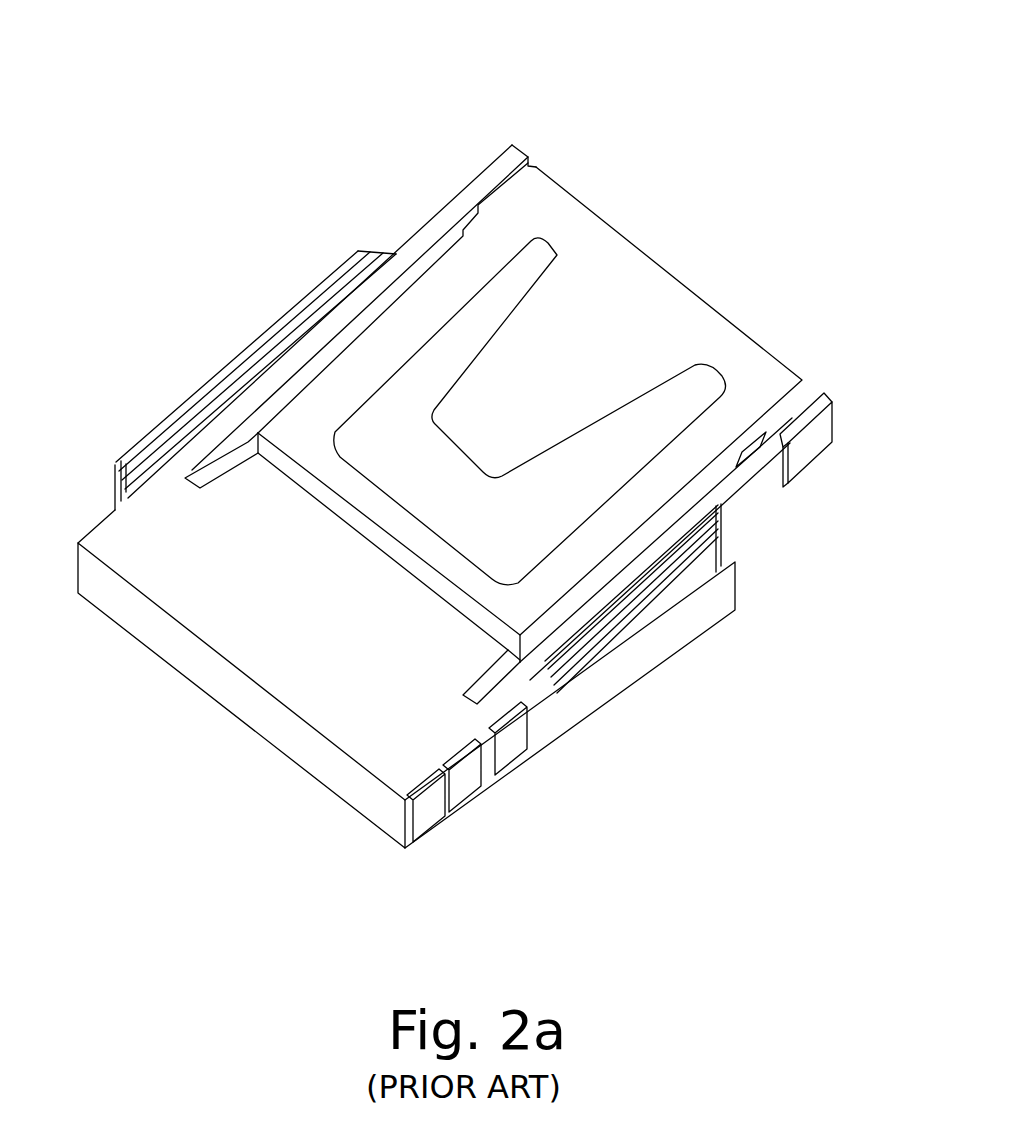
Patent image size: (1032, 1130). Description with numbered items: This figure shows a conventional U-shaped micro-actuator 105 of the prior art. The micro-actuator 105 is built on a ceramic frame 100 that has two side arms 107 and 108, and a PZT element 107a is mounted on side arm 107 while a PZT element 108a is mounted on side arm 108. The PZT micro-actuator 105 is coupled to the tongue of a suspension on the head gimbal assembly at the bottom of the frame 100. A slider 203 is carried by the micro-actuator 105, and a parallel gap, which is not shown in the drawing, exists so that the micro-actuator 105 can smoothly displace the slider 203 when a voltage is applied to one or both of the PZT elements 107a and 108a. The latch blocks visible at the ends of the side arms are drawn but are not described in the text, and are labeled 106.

The ceramic frame 100 is at (217, 620).
The micro-actuator 105 is at (577, 138).
The latch block 106 is at (460, 196).
The side arm 107 is at (437, 263).
The PZT element 107a is at (282, 318).
The side arm 108 is at (728, 480).
The PZT element 108a is at (678, 583).
The slider 203 is at (615, 280).